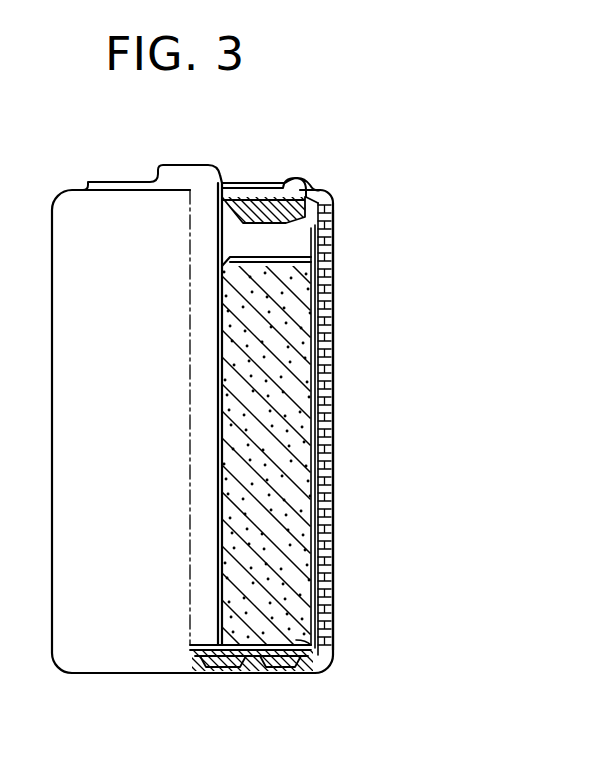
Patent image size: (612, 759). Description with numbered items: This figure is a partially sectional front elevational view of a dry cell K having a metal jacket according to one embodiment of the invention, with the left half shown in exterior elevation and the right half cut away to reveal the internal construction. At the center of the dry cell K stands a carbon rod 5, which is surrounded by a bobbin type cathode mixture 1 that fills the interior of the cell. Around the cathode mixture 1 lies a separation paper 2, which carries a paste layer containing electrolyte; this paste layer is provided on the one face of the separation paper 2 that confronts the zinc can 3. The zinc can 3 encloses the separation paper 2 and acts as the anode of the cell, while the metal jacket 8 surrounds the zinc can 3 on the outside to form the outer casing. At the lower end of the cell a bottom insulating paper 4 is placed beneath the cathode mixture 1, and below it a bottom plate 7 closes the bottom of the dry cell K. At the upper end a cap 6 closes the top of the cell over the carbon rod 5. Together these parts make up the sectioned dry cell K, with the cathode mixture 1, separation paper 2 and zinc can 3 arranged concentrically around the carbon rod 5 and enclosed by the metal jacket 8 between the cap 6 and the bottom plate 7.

The bobbin type cathode mixture 1 is at (300, 299).
The separation paper 2 is at (318, 374).
The zinc can 3 is at (325, 436).
The bottom insulating paper 4 is at (296, 636).
The carbon rod 5 is at (205, 192).
The cap 6 is at (288, 198).
The bottom plate 7 is at (275, 672).
The metal jacket 8 is at (335, 492).
The dry cell K is at (420, 323).